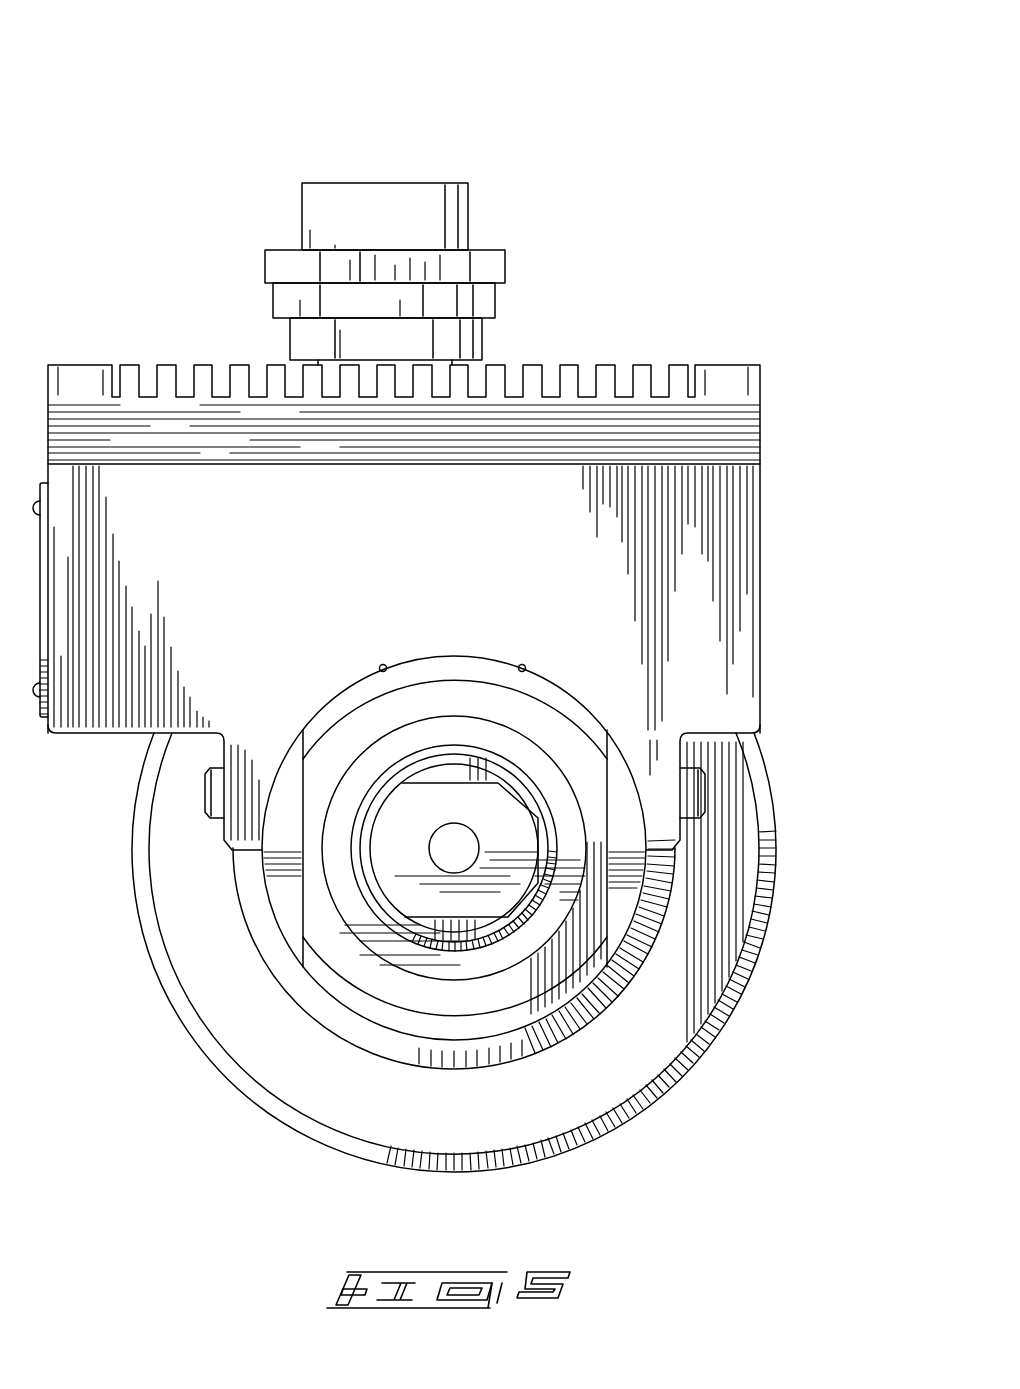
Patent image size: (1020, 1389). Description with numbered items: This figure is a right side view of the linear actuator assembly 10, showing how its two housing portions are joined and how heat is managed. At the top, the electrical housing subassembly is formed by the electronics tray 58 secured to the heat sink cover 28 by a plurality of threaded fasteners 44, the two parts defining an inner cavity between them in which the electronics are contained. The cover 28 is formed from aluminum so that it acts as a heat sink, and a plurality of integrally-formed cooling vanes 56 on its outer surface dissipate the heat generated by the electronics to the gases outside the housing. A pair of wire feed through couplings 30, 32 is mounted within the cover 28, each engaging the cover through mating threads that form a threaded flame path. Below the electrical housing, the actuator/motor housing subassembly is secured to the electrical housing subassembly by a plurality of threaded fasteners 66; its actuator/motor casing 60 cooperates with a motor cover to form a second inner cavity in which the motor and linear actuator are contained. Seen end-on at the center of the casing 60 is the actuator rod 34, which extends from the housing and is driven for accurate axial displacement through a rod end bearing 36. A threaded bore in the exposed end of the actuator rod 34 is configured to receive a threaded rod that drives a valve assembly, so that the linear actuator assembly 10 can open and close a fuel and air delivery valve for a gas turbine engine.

The linear actuator assembly 10 is at (727, 107).
The heat sink cover 28 is at (760, 423).
The wire feed through coupling 30 is at (400, 245).
The wire feed through coupling 32 is at (397, 182).
The actuator rod 34 is at (423, 838).
The rod end bearing 36 is at (482, 773).
The threaded fasteners 44 is at (78, 380).
The cooling vanes 56 is at (605, 365).
The electronics tray 58 is at (400, 597).
The actuator/motor casing 60 is at (373, 992).
The threaded fasteners 66 is at (212, 788).